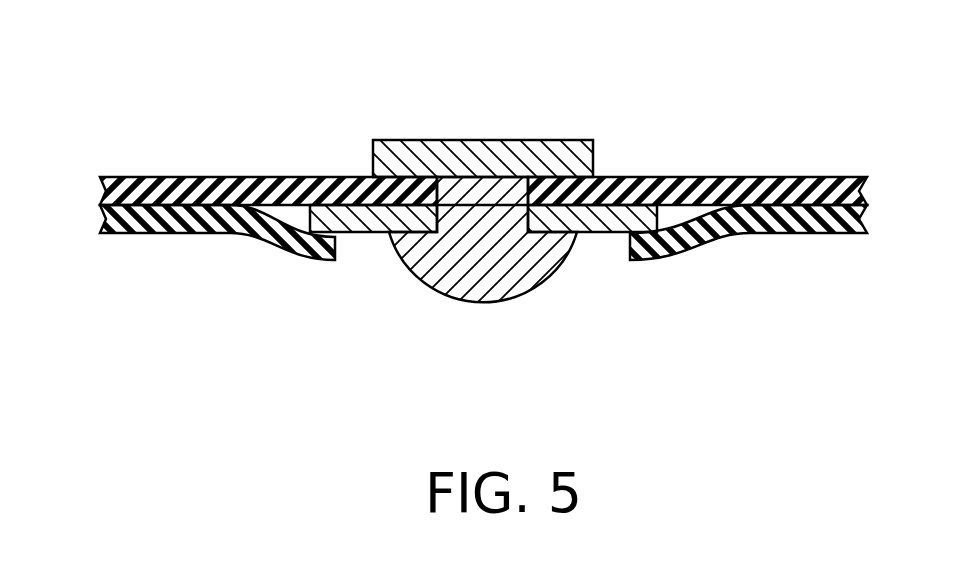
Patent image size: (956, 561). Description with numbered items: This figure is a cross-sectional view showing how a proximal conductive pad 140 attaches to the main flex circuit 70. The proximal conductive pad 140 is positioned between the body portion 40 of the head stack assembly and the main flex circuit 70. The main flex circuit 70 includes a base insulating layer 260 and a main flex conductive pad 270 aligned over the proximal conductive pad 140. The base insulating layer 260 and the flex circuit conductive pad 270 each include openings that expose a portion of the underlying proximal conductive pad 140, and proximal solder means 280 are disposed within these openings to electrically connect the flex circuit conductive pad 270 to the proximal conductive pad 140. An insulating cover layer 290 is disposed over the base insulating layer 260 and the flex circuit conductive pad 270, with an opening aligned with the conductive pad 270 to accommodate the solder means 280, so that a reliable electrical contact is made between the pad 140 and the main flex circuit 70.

The body portion 40 is at (361, 58).
The main flex circuit 70 is at (92, 173).
The proximal conductive pad 140 is at (506, 138).
The base insulating layer 260 is at (847, 182).
The main flex conductive pad 270 is at (605, 233).
The proximal solder means 280 is at (487, 303).
The insulating cover layer 290 is at (850, 220).